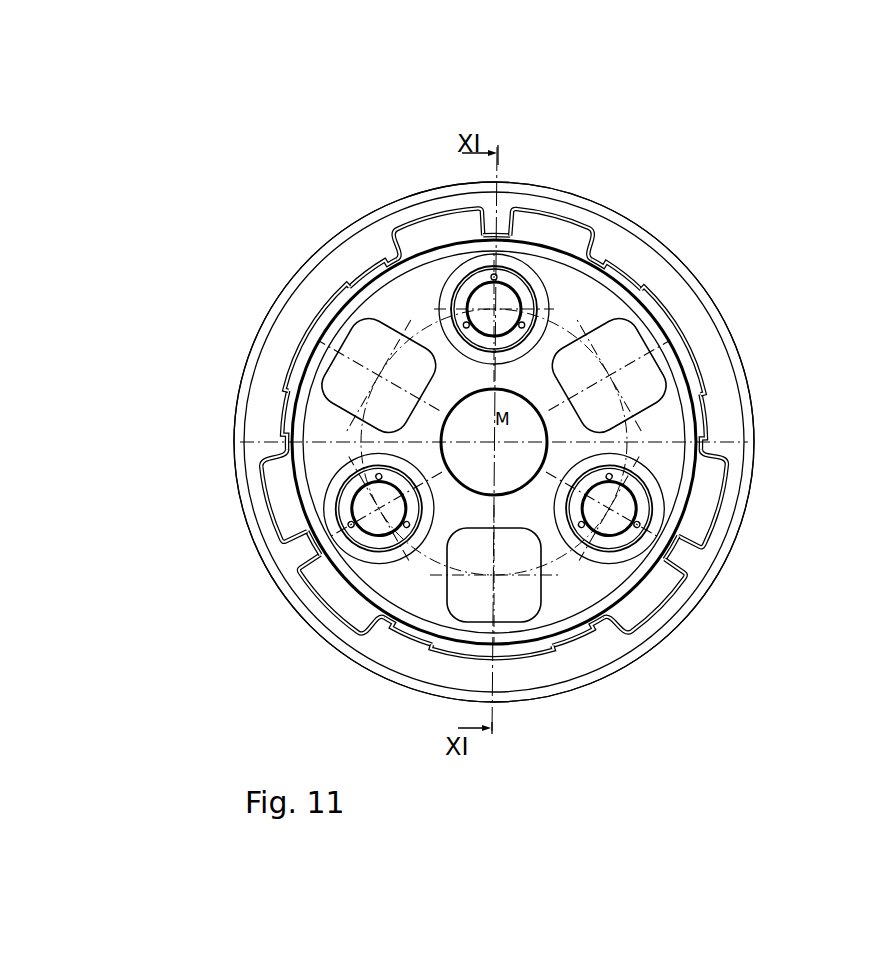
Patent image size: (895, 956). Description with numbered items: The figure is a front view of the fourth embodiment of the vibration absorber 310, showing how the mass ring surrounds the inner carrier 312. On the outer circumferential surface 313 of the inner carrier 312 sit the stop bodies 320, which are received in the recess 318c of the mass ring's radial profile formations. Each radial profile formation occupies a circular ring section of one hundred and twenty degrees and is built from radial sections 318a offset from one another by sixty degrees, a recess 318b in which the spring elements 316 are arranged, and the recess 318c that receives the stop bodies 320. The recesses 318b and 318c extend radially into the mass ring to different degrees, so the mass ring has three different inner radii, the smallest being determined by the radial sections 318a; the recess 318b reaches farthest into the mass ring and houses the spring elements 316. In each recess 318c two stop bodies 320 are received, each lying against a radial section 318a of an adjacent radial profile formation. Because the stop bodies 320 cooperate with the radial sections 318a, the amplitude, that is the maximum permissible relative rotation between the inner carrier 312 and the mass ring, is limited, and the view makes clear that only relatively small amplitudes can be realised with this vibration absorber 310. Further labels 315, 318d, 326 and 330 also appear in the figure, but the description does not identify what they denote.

The vibration absorber 310 is at (750, 130).
The inner carrier 312 is at (730, 347).
The outer circumferential surface 313 is at (568, 232).
The lug 315 is at (446, 222).
The spring elements 316 is at (507, 210).
The radial sections 318a is at (384, 250).
The recess 318b is at (415, 187).
The recess 318c is at (616, 235).
The connecting band section 318d is at (700, 312).
The stop bodies 320 is at (518, 445).
The spring tab 326 is at (660, 287).
The spring lug 330 is at (293, 517).